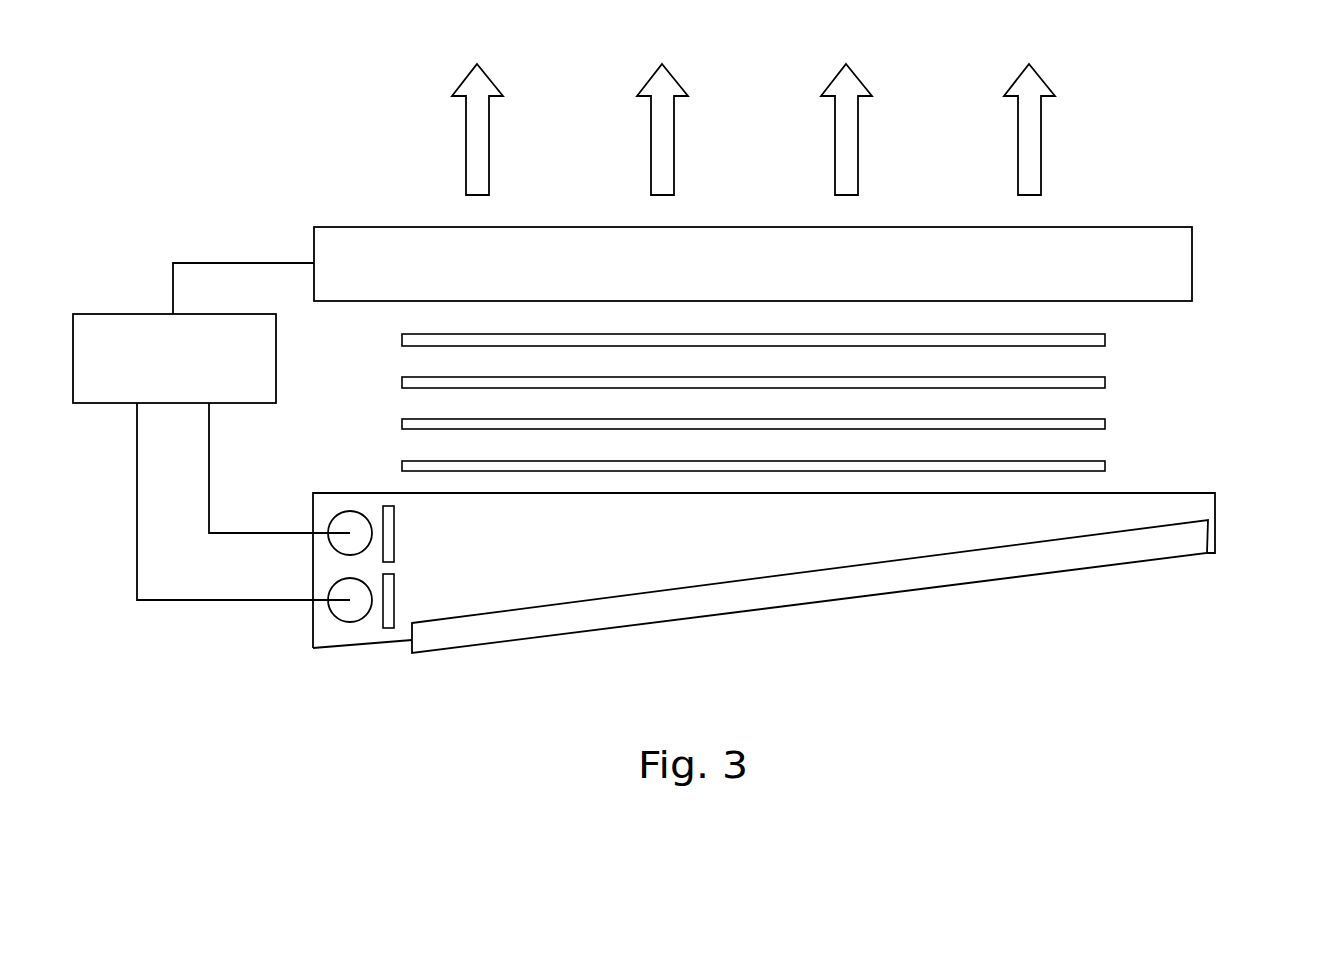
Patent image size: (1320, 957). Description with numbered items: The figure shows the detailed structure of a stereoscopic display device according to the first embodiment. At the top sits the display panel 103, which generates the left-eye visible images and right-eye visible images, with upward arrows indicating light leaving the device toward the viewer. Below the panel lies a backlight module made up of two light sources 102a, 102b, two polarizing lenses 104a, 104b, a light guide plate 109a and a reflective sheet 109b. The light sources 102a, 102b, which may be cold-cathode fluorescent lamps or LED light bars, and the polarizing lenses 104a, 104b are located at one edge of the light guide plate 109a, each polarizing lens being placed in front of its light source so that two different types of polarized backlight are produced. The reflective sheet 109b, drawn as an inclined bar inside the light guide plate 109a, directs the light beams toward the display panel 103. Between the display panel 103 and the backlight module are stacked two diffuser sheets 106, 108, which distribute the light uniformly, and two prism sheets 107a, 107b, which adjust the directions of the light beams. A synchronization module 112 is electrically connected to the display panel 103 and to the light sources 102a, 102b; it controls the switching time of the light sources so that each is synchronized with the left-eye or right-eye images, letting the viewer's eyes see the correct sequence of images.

The display panel 103 is at (1182, 263).
The synchronization module 112 is at (123, 313).
The diffuser sheet 106 is at (1105, 338).
The prism sheet 107a is at (1105, 381).
The prism sheet 107b is at (1105, 422).
The diffuser sheet 108 is at (1105, 464).
The light guide plate 109a is at (1217, 505).
The reflective sheet 109b is at (798, 593).
The light source 102a is at (342, 523).
The light source 102b is at (340, 608).
The polarizing lens 104a is at (388, 505).
The polarizing lens 104b is at (390, 630).